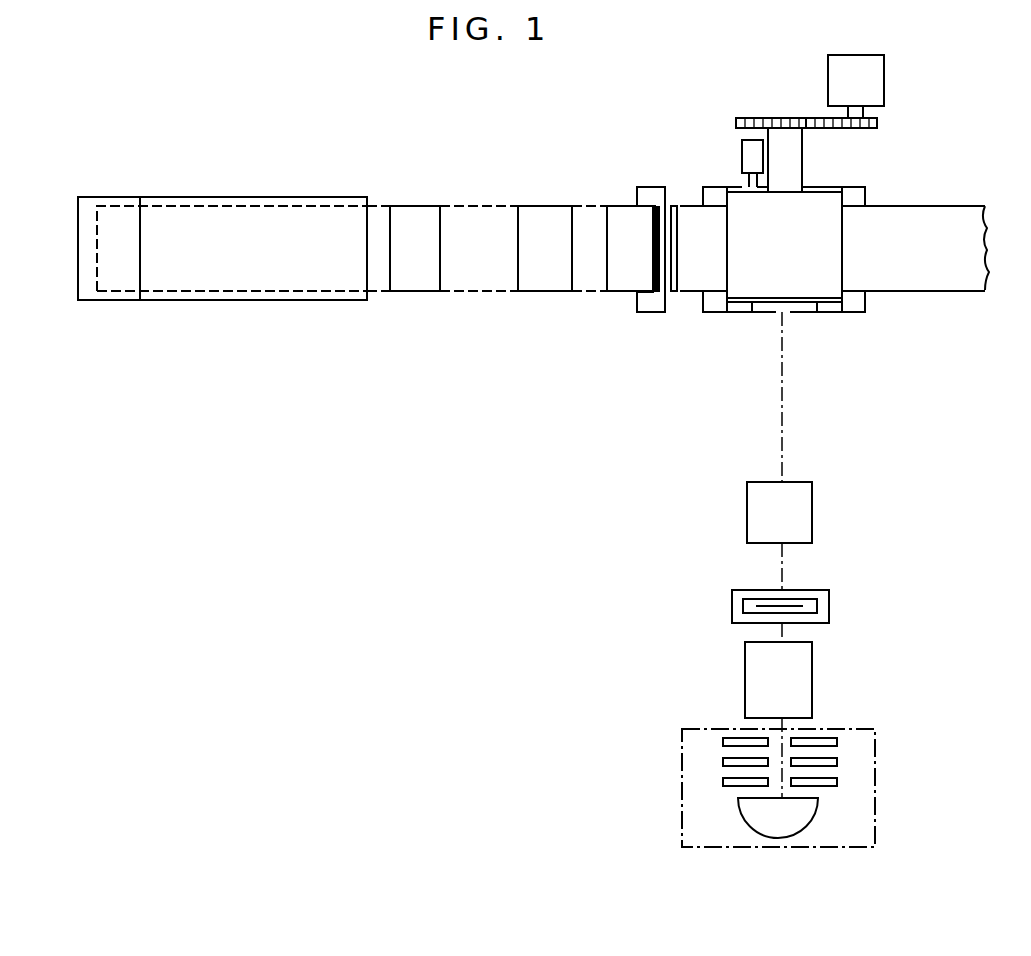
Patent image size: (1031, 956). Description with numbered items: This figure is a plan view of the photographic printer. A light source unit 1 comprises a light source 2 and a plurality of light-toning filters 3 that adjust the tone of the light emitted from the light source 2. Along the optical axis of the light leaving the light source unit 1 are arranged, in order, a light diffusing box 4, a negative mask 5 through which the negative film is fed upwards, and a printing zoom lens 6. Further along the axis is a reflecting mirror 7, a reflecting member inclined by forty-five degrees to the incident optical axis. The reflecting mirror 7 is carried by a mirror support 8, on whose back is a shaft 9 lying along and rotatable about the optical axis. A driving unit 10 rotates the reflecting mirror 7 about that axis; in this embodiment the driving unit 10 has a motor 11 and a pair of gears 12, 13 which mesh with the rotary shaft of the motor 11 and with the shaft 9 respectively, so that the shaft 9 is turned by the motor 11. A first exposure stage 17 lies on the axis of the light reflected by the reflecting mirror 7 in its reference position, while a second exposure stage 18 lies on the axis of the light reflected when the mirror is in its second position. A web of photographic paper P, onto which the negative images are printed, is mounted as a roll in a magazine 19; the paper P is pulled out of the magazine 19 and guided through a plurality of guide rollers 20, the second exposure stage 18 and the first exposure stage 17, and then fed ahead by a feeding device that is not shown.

The light source unit 1 is at (680, 758).
The light source 2 is at (810, 816).
The light-toning filters 3 is at (838, 782).
The light diffusing box 4 is at (800, 678).
The negative mask 5 is at (740, 606).
The printing zoom lens 6 is at (752, 503).
The reflecting mirror 7 is at (828, 312).
The mirror support 8 is at (840, 200).
The shaft 9 is at (782, 157).
The driving unit 10 is at (780, 100).
The motor 11 is at (877, 72).
The gear 12 is at (877, 122).
The gear 13 is at (742, 118).
The first exposure stage 17 is at (703, 312).
The second exposure stage 18 is at (638, 200).
The magazine 19 is at (219, 197).
The guide rollers 20 is at (417, 213).
The photographic paper P is at (480, 284).